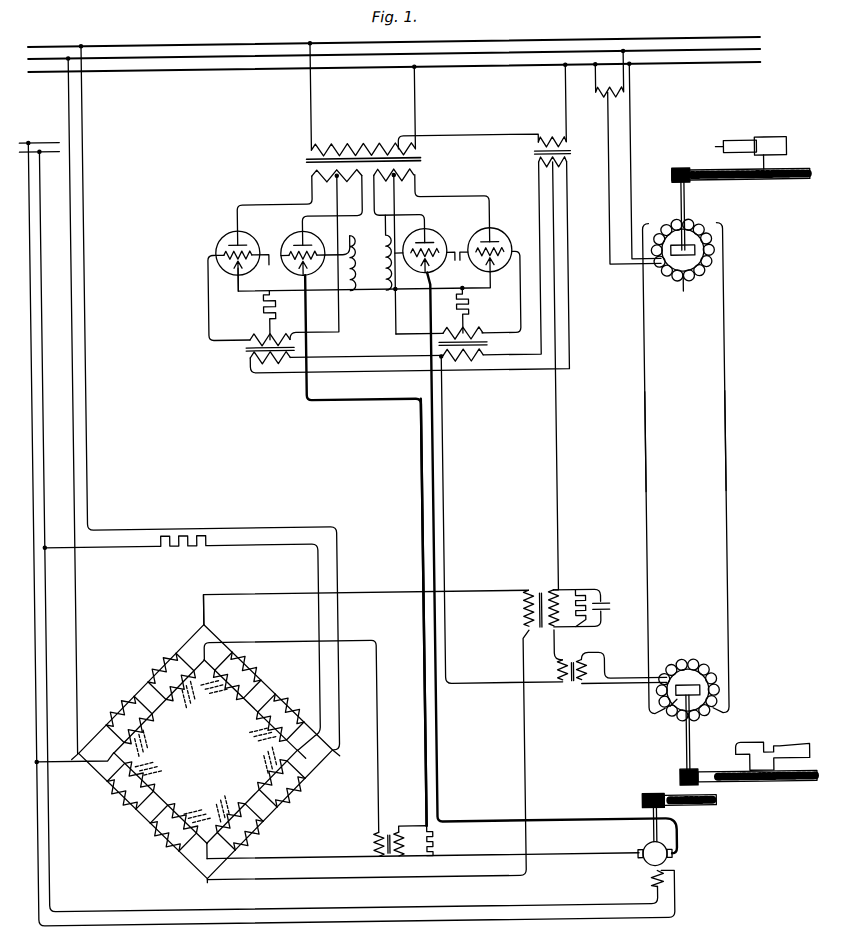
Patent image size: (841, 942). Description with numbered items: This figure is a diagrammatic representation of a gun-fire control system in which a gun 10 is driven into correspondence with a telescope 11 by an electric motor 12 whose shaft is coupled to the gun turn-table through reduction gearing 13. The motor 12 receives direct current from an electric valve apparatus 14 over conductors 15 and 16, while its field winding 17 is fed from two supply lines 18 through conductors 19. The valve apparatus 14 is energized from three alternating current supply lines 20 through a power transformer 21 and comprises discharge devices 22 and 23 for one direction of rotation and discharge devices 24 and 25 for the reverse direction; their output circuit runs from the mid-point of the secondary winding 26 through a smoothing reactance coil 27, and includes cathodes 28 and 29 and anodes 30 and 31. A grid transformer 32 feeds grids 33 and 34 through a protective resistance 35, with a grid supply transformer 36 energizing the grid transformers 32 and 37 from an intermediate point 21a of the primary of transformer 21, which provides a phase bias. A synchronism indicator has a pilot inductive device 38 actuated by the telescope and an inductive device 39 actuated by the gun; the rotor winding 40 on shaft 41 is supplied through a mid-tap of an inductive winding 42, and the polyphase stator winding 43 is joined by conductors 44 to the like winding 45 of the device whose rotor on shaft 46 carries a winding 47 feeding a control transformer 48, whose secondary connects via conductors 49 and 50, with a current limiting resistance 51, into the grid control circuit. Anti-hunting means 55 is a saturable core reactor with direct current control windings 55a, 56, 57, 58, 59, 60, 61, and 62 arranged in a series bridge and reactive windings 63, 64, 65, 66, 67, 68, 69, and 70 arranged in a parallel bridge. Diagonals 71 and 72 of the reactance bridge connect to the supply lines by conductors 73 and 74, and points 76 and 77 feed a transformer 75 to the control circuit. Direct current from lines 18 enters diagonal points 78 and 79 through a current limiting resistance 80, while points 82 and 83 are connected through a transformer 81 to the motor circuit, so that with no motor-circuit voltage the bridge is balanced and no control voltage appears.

The gun 10 is at (744, 756).
The telescope 11 is at (766, 148).
The electric motor 12 is at (634, 854).
The reduction gearing 13 is at (730, 804).
The electric valve apparatus 14 is at (237, 260).
The conductor 15 is at (414, 445).
The conductor 16 is at (429, 463).
The direct current field winding 17 is at (640, 882).
The supply lines 18 is at (50, 143).
The conductors 19 is at (27, 858).
The supply lines 20 is at (263, 72).
The power transformer 21 is at (420, 162).
The intermediate point 21a is at (400, 150).
The electric discharge device 22 is at (240, 236).
The electric discharge device 23 is at (296, 236).
The electric discharge device 24 is at (436, 241).
The electric discharge device 25 is at (500, 241).
The secondary winding 26 is at (310, 178).
The smoothing reactance coil 27 is at (354, 252).
The cathode 28 is at (240, 288).
The cathode 29 is at (300, 281).
The anode 30 is at (218, 242).
The anode 31 is at (314, 250).
The grid transformer 32 is at (244, 352).
The grid 33 is at (262, 262).
The grid 34 is at (282, 254).
The protective resistance 35 is at (259, 311).
The grid supply transformer 36 is at (534, 157).
The grid transformer 37 is at (468, 262).
The inductive device 38 is at (665, 238).
The inductive device 39 is at (666, 719).
The rotor winding 40 is at (686, 266).
The shaft 41 is at (684, 202).
The inductive winding 42 is at (598, 100).
The polyphase winding 43 is at (702, 238).
The conductors 44 is at (642, 459).
The winding 45 is at (696, 720).
The shaft 46 is at (682, 761).
The winding 47 is at (676, 694).
The control transformer 48 is at (612, 676).
The conductor 49 is at (438, 528).
The conductor 50 is at (552, 444).
The current limiting resistance 51 is at (577, 630).
The anti-hunting means 55 is at (206, 748).
The direct current control winding 55a is at (140, 722).
The direct current control winding 56 is at (172, 688).
The direct current control winding 57 is at (236, 696).
The direct current control winding 58 is at (276, 732).
The direct current control winding 59 is at (264, 796).
The direct current control winding 60 is at (228, 832).
The direct current control winding 61 is at (164, 812).
The direct current control winding 62 is at (128, 780).
The alternating current reactive winding 63 is at (114, 710).
The alternating current reactive winding 64 is at (155, 672).
The alternating current reactive winding 65 is at (246, 674).
The alternating current reactive winding 66 is at (284, 712).
The alternating current reactive winding 67 is at (282, 798).
The alternating current reactive winding 68 is at (250, 836).
The alternating current reactive winding 69 is at (152, 845).
The alternating current reactive winding 70 is at (110, 806).
The diagonal 71 is at (70, 752).
The diagonal 72 is at (325, 756).
The conductor 73 is at (69, 361).
The conductor 74 is at (82, 386).
The transformer 75 is at (384, 724).
The diagonal point 76 is at (198, 628).
The diagonal point 77 is at (196, 881).
The diagonal point 78 is at (104, 754).
The diagonal point 79 is at (290, 758).
The current limiting resistance 80 is at (176, 548).
The transformer 81 is at (422, 832).
The diagonal point 82 is at (199, 662).
The diagonal point 83 is at (196, 846).